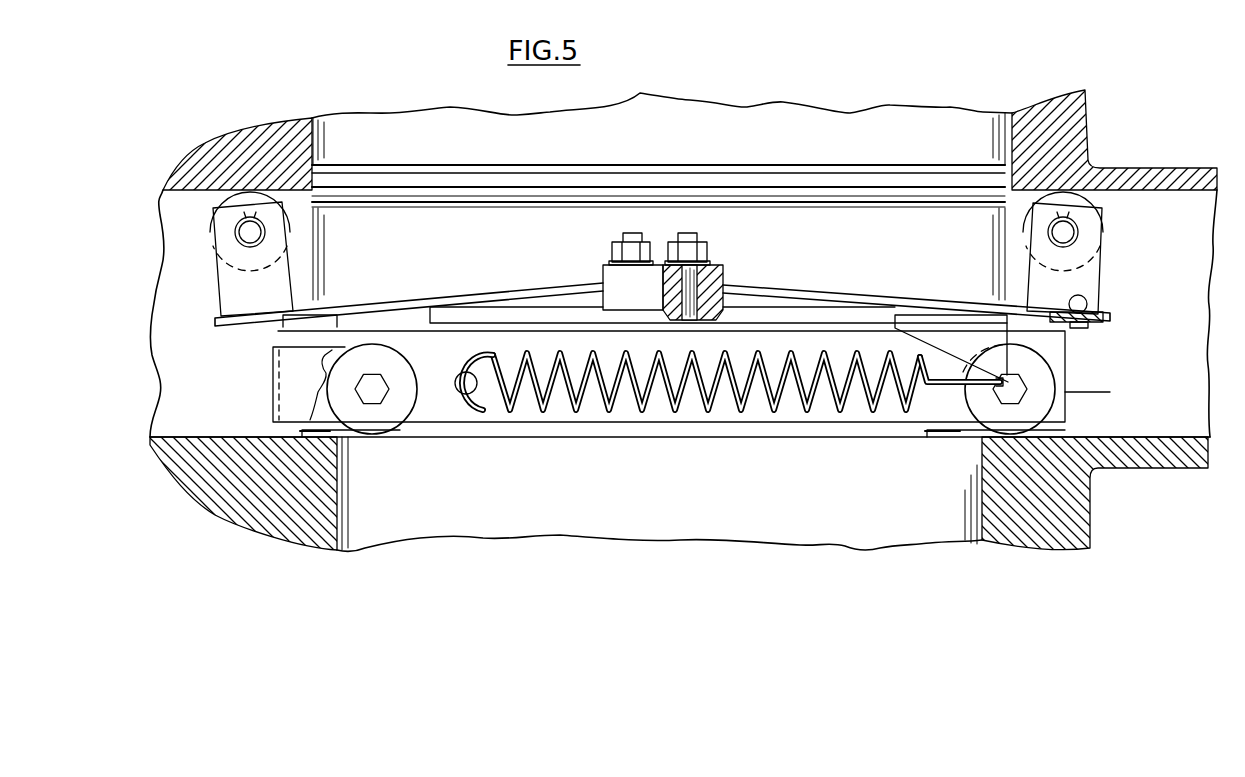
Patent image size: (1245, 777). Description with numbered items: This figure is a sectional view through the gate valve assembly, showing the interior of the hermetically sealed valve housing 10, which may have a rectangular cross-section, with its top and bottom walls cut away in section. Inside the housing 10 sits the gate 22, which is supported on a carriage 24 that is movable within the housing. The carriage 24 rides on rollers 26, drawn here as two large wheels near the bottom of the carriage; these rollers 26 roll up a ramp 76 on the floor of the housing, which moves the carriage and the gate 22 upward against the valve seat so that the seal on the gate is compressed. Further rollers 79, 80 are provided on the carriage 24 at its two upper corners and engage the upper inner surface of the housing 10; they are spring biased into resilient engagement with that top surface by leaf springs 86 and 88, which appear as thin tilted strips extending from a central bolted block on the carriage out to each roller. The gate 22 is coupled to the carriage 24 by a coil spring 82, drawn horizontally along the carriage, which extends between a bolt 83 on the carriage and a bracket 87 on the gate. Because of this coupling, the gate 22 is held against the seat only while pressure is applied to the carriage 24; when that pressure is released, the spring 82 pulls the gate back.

The valve housing 10 is at (1131, 175).
The gate 22 is at (878, 240).
The carriage 24 is at (850, 437).
The rollers 26 is at (378, 423).
The ramp 76 is at (303, 433).
The roller 79 is at (1105, 236).
The roller 80 is at (210, 236).
The spring 82 is at (590, 411).
The bolt 83 is at (465, 383).
The leaf spring 86 is at (767, 292).
The bracket 87 is at (896, 410).
The leaf spring 88 is at (407, 268).